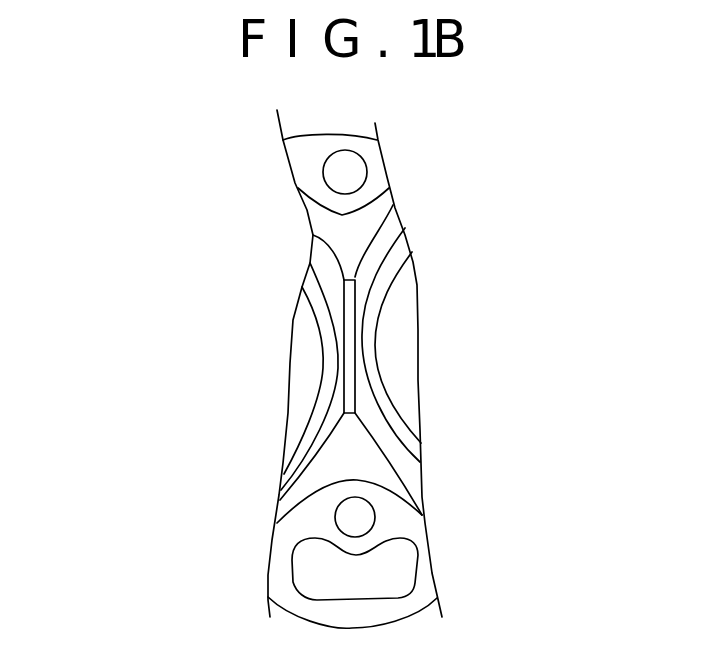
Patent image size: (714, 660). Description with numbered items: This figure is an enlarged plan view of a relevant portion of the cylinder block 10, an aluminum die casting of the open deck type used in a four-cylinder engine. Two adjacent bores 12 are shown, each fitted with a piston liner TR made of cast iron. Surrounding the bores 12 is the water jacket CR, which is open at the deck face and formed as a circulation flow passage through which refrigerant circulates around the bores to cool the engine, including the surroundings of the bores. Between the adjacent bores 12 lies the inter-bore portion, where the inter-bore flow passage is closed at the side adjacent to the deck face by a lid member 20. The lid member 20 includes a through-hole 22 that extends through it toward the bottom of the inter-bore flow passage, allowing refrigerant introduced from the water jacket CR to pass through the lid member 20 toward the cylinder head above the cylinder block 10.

The cylinder block 10 is at (272, 574).
The bore 12 is at (298, 461).
The lid member 20 is at (354, 350).
The through-hole 22 is at (350, 390).
The water jacket CR is at (358, 228).
The piston liner TR is at (308, 423).